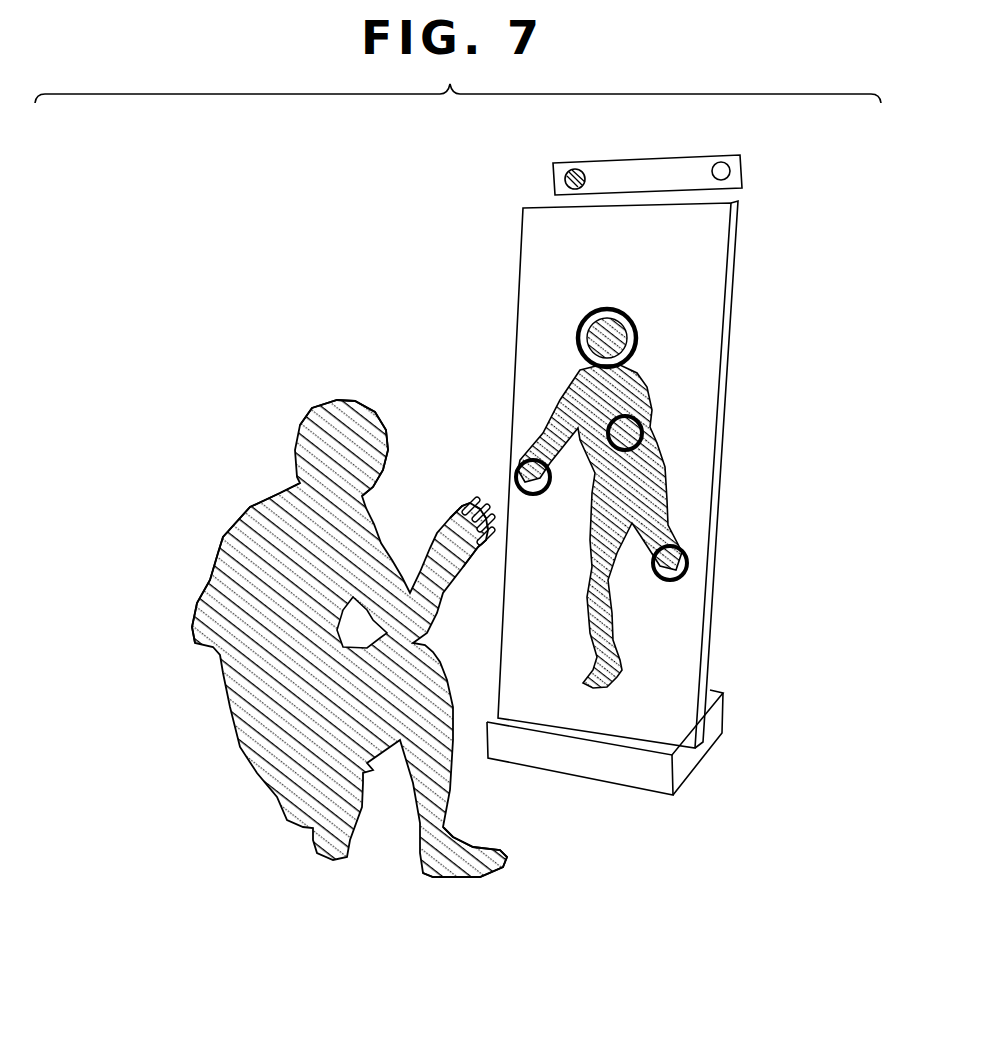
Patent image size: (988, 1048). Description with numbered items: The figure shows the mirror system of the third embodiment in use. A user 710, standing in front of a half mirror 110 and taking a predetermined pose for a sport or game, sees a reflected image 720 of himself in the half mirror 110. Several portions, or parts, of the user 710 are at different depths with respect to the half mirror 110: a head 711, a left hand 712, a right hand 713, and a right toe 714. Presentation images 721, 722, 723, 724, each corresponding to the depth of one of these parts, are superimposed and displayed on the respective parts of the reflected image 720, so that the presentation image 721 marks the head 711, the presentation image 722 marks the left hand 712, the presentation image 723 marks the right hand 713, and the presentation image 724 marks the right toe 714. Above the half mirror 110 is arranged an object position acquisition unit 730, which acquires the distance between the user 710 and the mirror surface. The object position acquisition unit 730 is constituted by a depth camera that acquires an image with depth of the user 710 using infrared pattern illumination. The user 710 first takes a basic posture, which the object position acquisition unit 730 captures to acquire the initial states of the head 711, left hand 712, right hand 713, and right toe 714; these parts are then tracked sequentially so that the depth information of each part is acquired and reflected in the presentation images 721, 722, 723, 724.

The half mirror 110 is at (523, 240).
The object position acquisition unit 730 is at (553, 170).
The reflected image 720 is at (677, 485).
The presentation image 721 is at (603, 309).
The presentation image 722 is at (514, 474).
The presentation image 723 is at (640, 418).
The presentation image 724 is at (670, 583).
The user 710 is at (333, 618).
The head 711 is at (314, 406).
The left hand 712 is at (197, 602).
The right hand 713 is at (437, 533).
The right toe 714 is at (504, 851).